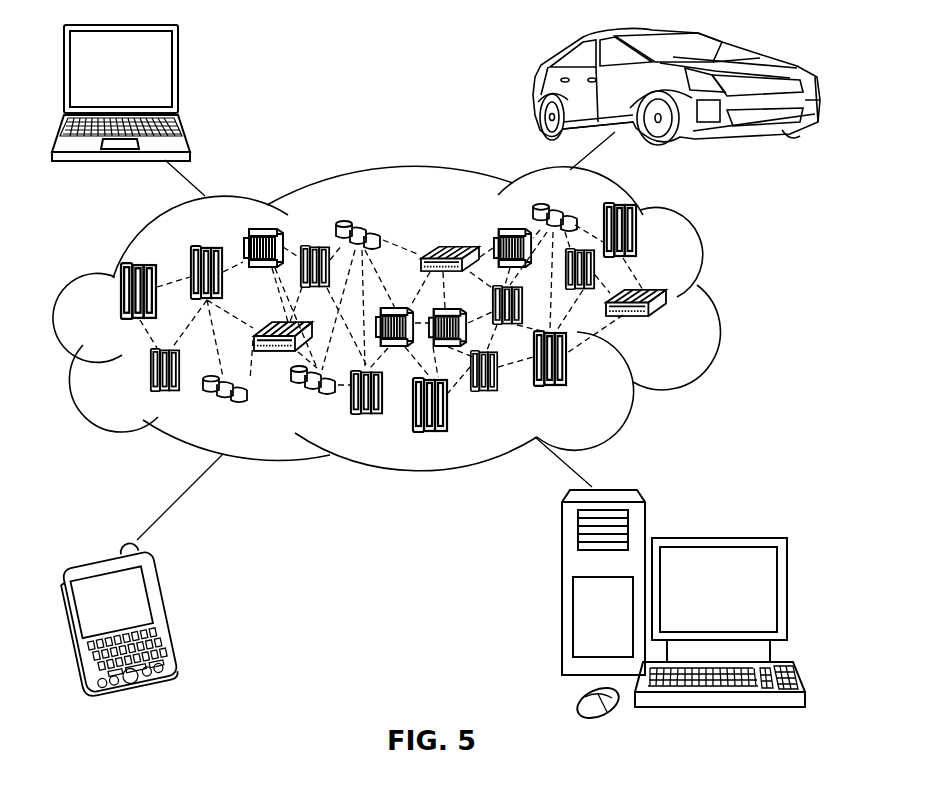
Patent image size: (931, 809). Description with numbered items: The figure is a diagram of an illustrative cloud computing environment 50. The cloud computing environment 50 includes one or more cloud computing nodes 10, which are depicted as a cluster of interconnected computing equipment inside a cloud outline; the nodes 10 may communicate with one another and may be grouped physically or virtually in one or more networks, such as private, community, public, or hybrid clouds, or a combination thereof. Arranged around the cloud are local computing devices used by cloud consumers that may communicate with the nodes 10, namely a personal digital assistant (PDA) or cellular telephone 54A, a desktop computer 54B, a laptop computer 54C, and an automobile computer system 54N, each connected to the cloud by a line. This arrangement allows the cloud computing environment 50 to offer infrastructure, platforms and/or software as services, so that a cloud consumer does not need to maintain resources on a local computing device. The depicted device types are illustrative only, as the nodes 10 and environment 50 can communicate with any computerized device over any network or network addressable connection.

The laptop computer 54C is at (178, 78).
The automobile computer system 54N is at (535, 92).
The personal digital assistant (PDA) or cellular telephone 54A is at (172, 614).
The desktop computer 54B is at (715, 537).
The cloud computing environment 50 is at (717, 300).
The cloud computing node 10 is at (668, 323).